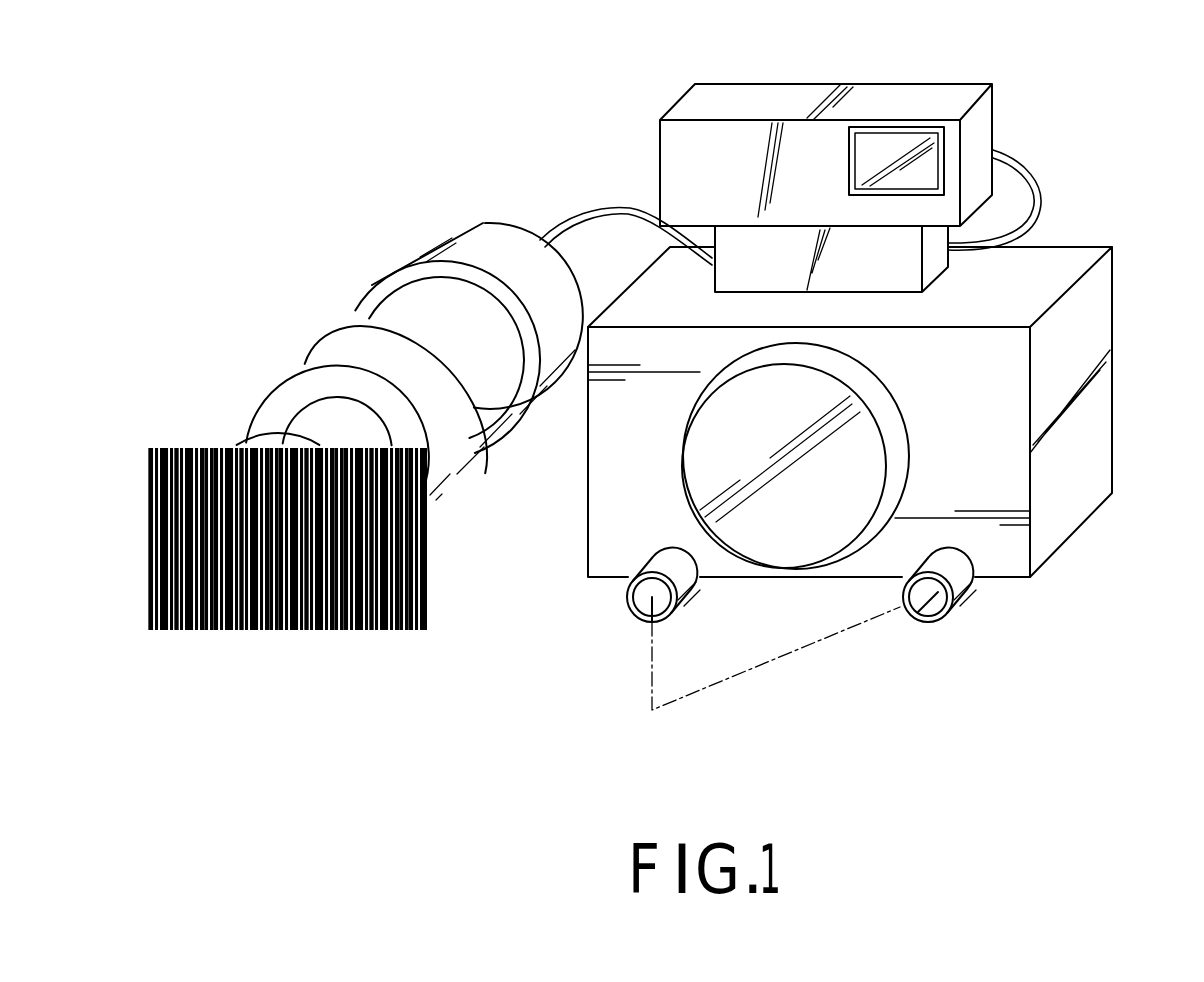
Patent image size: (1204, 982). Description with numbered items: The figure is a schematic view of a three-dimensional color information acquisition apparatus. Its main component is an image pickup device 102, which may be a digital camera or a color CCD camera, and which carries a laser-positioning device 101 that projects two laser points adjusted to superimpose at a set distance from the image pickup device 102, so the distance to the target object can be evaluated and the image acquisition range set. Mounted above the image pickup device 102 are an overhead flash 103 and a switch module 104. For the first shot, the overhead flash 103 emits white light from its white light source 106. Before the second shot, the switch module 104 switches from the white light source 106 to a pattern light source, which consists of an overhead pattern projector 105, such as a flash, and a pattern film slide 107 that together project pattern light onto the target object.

The laser-positioning device 101 is at (917, 620).
The image pickup device 102 is at (1088, 528).
The overhead flash 103 is at (658, 143).
The switch module 104 is at (943, 240).
The overhead pattern projector 105 is at (387, 307).
The white light source 106 is at (896, 142).
The pattern film slide 107 is at (180, 448).